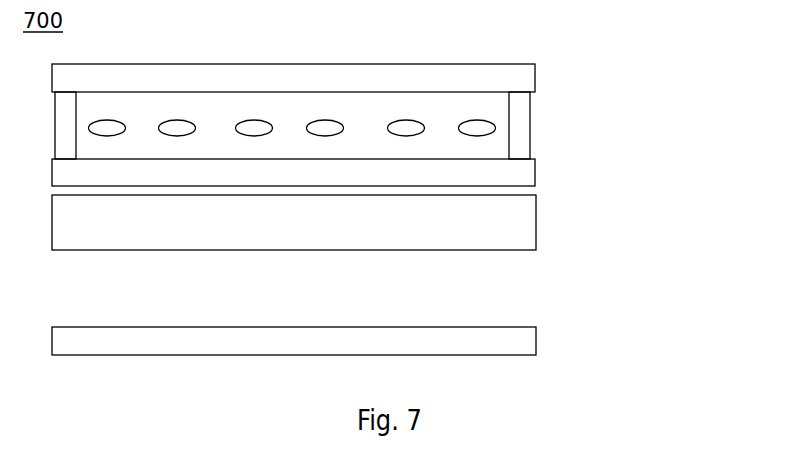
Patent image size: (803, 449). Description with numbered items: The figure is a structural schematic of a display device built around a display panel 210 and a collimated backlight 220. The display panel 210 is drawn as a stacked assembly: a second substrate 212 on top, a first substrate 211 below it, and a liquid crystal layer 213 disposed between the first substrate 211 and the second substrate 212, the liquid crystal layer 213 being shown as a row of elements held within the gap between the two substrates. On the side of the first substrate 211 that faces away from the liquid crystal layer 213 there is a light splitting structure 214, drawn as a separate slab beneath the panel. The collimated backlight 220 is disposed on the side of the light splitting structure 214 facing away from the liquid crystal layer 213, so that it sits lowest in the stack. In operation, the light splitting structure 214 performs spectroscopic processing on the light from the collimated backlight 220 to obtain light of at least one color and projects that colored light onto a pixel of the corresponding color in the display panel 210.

The display panel 210 is at (399, 125).
The first substrate 211 is at (535, 170).
The second substrate 212 is at (535, 78).
The liquid crystal layer 213 is at (495, 130).
The light splitting structure 214 is at (536, 217).
The collimated backlight 220 is at (536, 335).